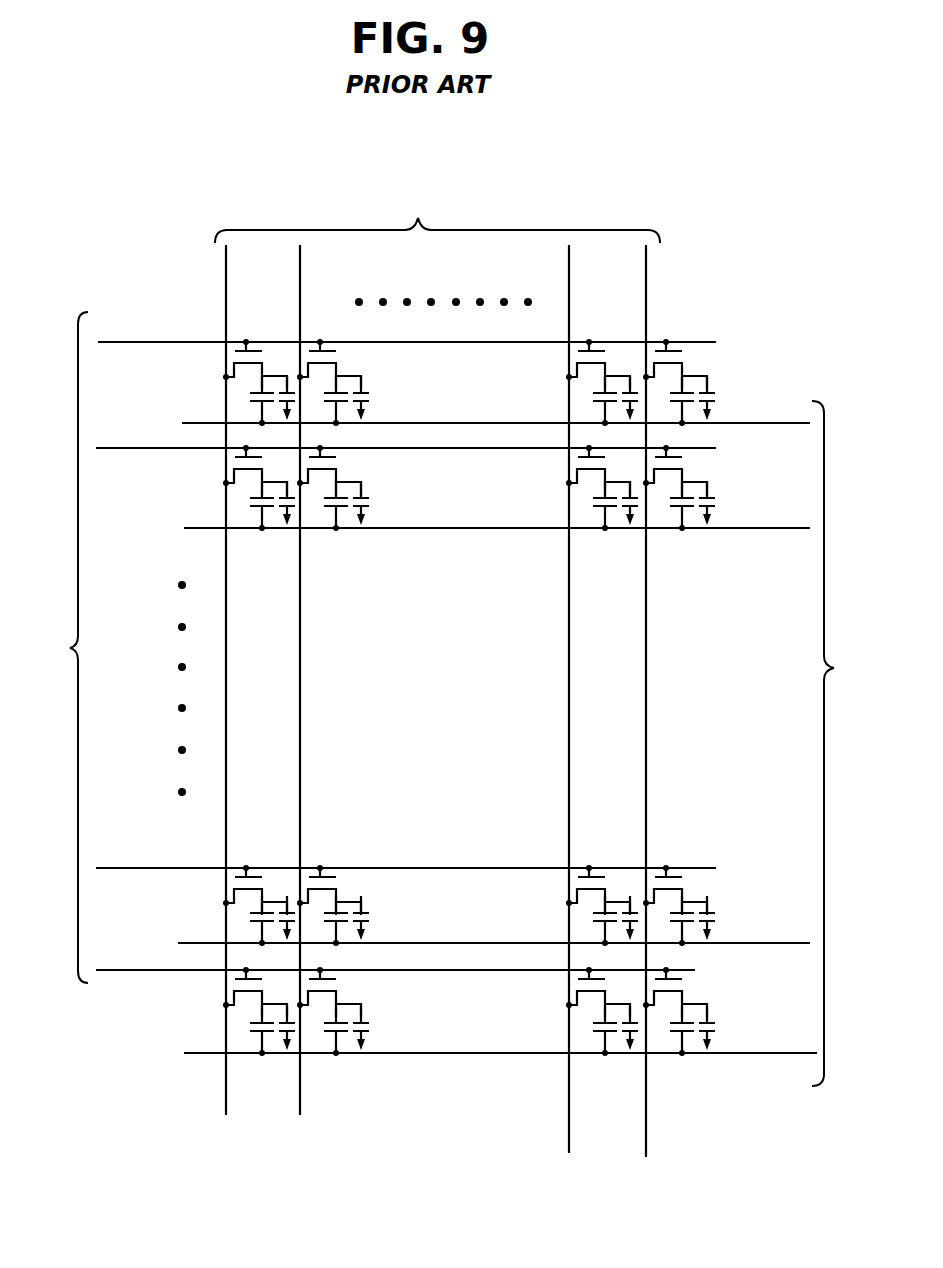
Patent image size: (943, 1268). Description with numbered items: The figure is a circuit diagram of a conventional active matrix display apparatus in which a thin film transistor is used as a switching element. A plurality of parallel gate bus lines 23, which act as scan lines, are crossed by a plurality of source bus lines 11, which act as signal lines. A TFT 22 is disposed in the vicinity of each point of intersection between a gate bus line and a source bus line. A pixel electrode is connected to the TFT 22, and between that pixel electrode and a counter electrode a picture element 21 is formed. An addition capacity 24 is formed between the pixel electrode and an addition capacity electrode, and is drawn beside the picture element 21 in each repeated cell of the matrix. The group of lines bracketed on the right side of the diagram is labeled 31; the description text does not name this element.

The source bus lines 11 is at (437, 217).
The picture element 21 is at (370, 401).
The TFT 22 is at (341, 356).
The gate bus lines 23 is at (63, 647).
The addition capacity 24 is at (350, 416).
The bit lines group 31 is at (839, 743).